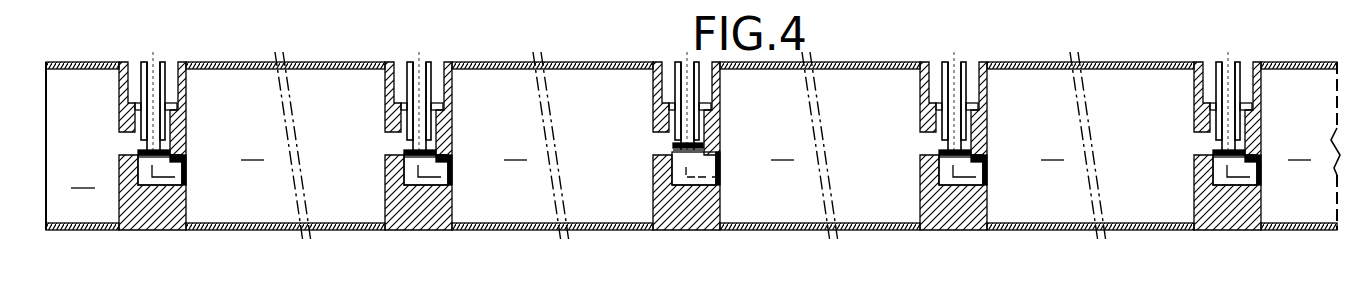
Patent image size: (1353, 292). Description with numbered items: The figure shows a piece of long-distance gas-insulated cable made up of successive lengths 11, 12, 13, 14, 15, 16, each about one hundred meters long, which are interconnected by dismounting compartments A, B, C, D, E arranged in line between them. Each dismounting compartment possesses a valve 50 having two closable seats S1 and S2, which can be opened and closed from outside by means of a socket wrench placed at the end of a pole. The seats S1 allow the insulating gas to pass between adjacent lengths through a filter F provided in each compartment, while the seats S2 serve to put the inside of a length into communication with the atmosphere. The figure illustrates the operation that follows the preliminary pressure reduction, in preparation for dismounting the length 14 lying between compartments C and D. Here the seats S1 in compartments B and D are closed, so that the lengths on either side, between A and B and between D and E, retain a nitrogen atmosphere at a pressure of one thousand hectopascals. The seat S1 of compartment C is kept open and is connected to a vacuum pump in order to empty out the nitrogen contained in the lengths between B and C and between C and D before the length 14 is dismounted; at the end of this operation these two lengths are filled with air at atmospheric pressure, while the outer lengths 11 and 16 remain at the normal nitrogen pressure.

The length 11 is at (90, 62).
The length 12 is at (333, 62).
The length 13 is at (501, 62).
The length 14 is at (836, 62).
The length 15 is at (1110, 62).
The length 16 is at (1305, 62).
The valve 50 is at (408, 61).
The dismounting compartment A is at (167, 212).
The dismounting compartment B is at (433, 212).
The dismounting compartment C is at (701, 212).
The dismounting compartment D is at (968, 212).
The dismounting compartment E is at (1242, 212).
The seat S1 is at (135, 150).
The seat S2 is at (179, 100).
The filter F is at (184, 172).